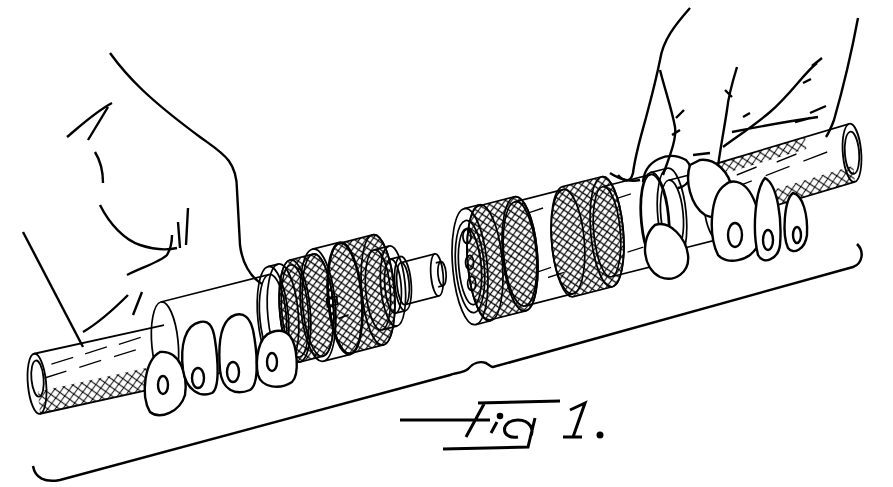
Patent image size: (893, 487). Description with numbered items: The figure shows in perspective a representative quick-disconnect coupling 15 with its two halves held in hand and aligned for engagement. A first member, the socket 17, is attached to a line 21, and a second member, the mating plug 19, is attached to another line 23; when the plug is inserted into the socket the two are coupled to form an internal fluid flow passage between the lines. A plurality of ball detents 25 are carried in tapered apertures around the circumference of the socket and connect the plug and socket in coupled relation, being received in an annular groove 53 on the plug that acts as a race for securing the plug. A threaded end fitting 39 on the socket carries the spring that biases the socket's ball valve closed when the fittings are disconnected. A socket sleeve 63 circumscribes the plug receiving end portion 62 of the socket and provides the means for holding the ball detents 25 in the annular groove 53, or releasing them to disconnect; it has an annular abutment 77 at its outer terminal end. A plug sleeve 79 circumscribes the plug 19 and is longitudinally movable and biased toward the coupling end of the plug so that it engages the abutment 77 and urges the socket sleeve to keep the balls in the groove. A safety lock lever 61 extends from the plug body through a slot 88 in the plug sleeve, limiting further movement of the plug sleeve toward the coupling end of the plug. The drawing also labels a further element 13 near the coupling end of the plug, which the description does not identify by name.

The coupling 15 is at (297, 242).
The socket 17 is at (572, 229).
The plug 19 is at (397, 250).
The collar 13 is at (417, 262).
The line 21 is at (820, 208).
The line 23 is at (80, 408).
The ball detents 25 is at (467, 237).
The threaded end fitting 39 is at (637, 263).
The annular groove 53 is at (397, 318).
The safety lock lever 61 is at (322, 252).
The plug receiving end portion 62 is at (413, 298).
The socket sleeve 63 is at (530, 190).
The annular abutment 77 is at (482, 316).
The plug sleeve 79 is at (327, 252).
The slot 88 is at (339, 358).